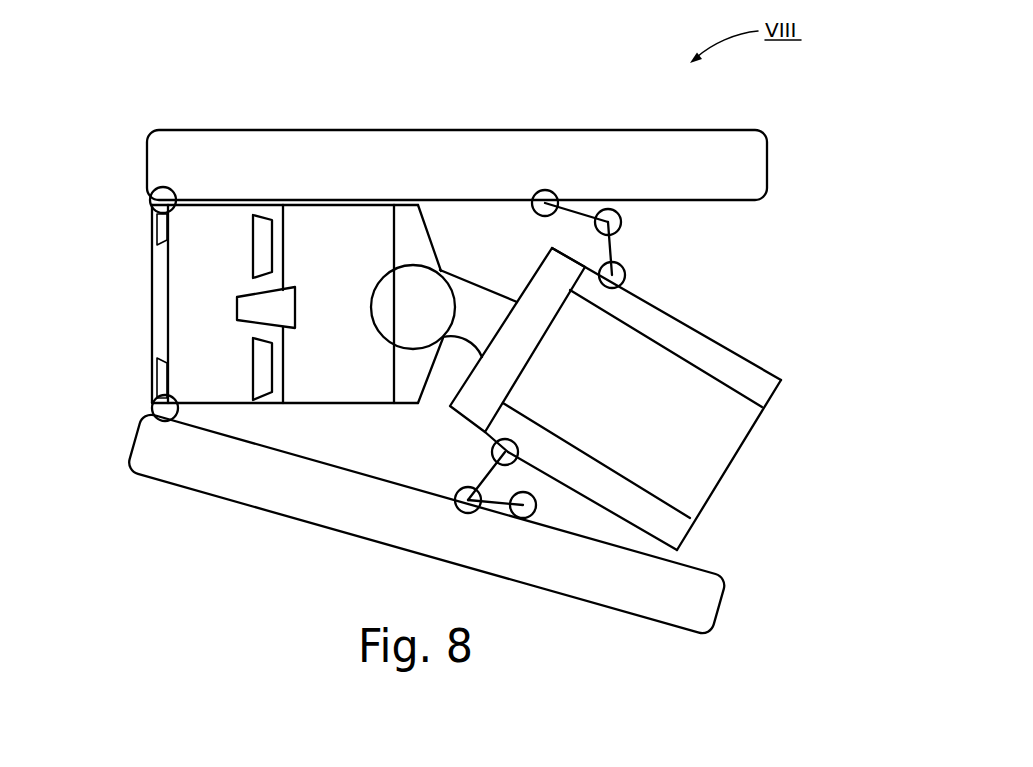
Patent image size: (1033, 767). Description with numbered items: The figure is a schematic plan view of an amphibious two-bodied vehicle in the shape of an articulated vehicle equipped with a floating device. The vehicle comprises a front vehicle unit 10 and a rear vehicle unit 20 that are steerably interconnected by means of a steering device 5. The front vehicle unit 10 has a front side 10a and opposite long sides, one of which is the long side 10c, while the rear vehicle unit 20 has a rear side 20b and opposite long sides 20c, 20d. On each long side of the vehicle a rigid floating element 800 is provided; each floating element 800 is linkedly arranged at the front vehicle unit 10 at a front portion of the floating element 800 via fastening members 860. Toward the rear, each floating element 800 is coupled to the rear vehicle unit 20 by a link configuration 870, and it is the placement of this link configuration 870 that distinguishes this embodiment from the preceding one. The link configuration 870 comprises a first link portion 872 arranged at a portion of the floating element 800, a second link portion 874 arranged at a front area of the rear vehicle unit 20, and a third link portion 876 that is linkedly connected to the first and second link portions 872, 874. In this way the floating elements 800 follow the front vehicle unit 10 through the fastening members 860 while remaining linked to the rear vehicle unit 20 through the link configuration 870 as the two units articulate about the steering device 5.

The steering device 5 is at (465, 283).
The front vehicle unit 10 is at (139, 315).
The front side 10a is at (150, 266).
The long side 10c is at (236, 205).
The rear vehicle unit 20 is at (727, 495).
The rear side 20b is at (749, 437).
The long side 20c is at (620, 518).
The long side 20d is at (755, 356).
The rigid floating element 800 is at (327, 119).
The fastening members 860 is at (150, 199).
The link configuration 870 is at (620, 246).
The first link portion 872 is at (545, 190).
The second link portion 874 is at (625, 279).
The third link portion 876 is at (608, 209).